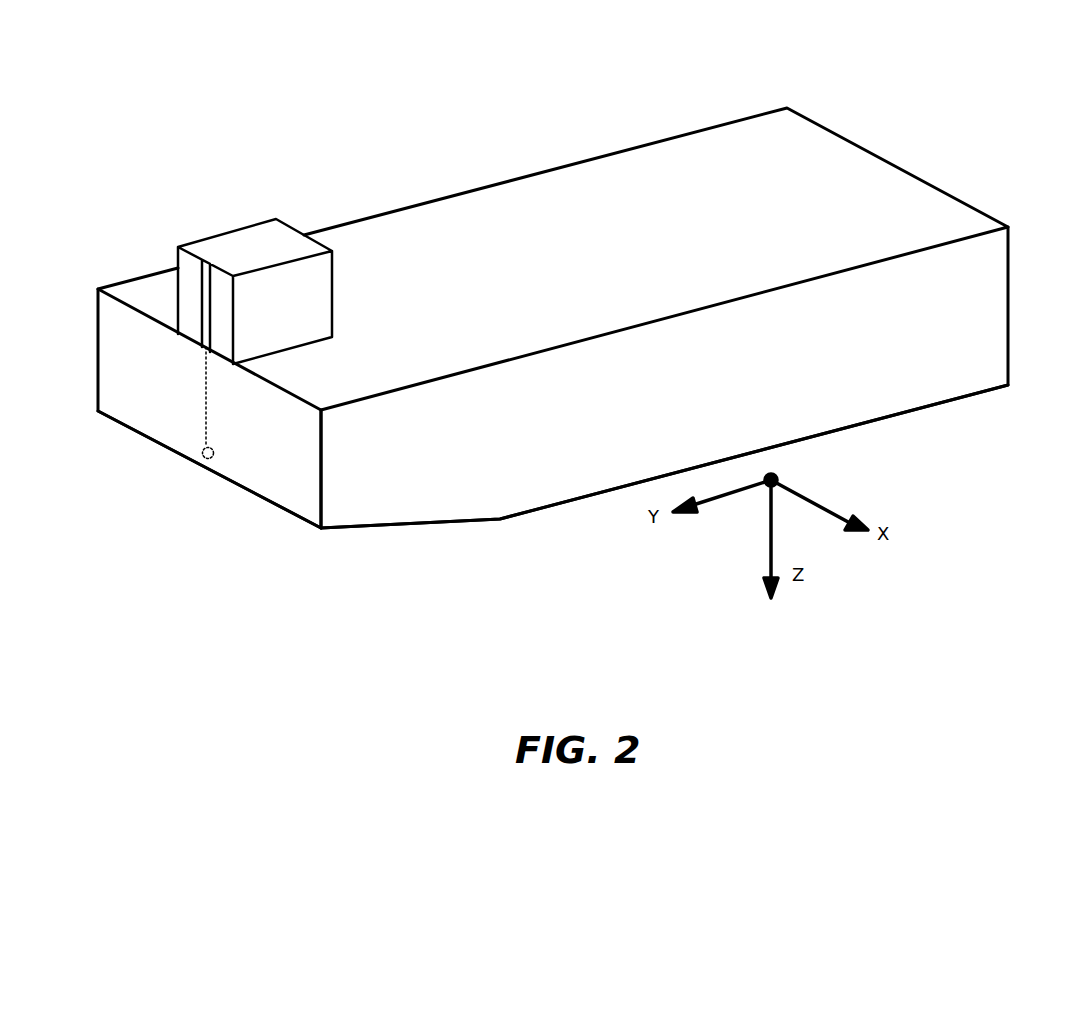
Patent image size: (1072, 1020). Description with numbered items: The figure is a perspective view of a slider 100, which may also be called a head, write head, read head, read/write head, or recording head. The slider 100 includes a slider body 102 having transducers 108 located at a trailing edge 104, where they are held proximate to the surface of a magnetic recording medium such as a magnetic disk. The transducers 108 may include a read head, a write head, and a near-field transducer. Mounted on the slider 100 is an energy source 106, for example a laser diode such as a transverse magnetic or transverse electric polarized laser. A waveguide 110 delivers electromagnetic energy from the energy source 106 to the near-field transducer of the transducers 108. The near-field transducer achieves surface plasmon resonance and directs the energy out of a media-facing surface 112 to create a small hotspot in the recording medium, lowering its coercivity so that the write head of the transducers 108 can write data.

The slider 100 is at (537, 359).
The slider body 102 is at (483, 202).
The trailing edge 104 is at (103, 380).
The energy source 106 is at (207, 245).
The transducers 108 is at (203, 477).
The waveguide 110 is at (207, 398).
The media-facing surface 112 is at (307, 523).